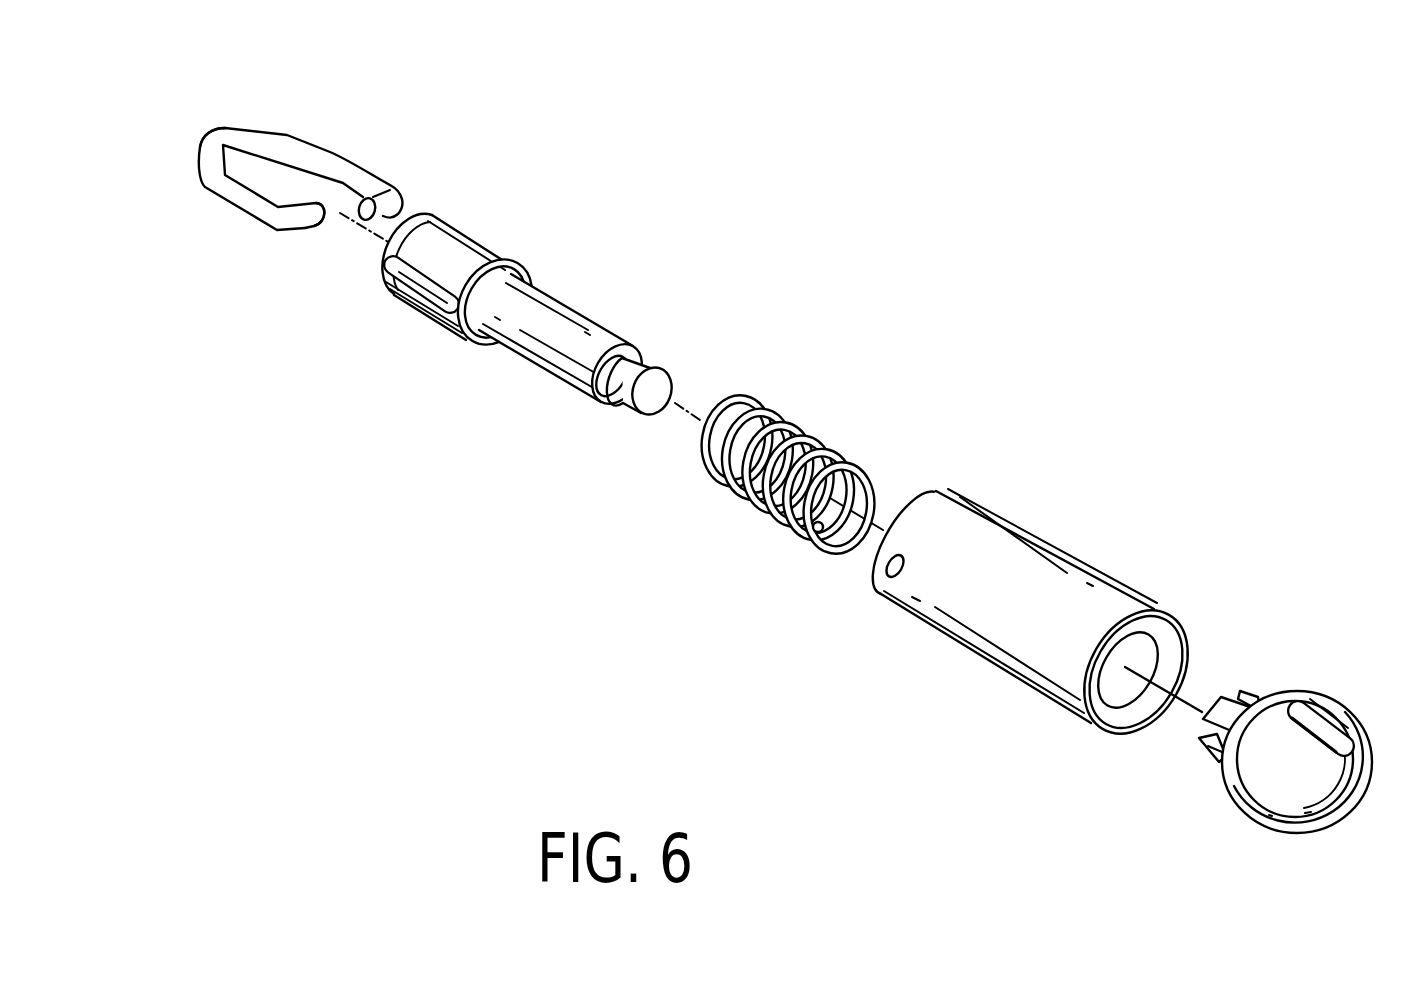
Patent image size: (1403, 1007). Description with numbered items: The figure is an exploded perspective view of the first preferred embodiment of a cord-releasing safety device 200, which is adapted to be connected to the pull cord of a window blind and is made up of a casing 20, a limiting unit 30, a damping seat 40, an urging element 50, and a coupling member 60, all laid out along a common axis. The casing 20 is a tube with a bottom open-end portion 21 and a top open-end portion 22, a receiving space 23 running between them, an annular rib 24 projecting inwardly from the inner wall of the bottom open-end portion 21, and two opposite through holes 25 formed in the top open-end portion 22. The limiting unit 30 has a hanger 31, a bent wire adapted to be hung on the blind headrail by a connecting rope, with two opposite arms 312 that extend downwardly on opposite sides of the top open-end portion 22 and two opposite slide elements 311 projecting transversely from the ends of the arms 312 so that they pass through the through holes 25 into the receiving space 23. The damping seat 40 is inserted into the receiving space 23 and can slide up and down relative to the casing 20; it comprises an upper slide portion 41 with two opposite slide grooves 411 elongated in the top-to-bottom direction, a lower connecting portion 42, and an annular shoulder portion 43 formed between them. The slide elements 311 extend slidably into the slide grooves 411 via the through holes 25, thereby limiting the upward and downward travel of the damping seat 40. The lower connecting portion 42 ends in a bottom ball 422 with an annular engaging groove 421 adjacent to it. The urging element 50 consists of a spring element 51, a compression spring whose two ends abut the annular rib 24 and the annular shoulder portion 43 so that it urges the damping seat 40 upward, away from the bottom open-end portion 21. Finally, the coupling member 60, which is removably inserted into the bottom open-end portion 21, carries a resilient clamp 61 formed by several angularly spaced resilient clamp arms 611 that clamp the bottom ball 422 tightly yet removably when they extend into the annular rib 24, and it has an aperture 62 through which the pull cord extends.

The cord-releasing safety device 200 is at (903, 314).
The casing 20 is at (1048, 541).
The bottom open-end portion 21 is at (1117, 615).
The top open-end portion 22 is at (920, 508).
The receiving space 23 is at (1140, 653).
The annular rib 24 is at (1117, 705).
The through holes 25 is at (890, 565).
The limiting unit 30 is at (299, 141).
The hanger 31 is at (206, 188).
The slide elements 311 is at (372, 198).
The arms 312 is at (268, 135).
The damping seat 40 is at (554, 280).
The upper slide portion 41 is at (453, 235).
The slide grooves 411 is at (420, 287).
The lower connecting portion 42 is at (532, 367).
The annular engaging groove 421 is at (610, 383).
The bottom ball 422 is at (641, 403).
The annular shoulder portion 43 is at (475, 340).
The urging element 50 is at (813, 416).
The spring element 51 is at (793, 418).
The coupling member 60 is at (1293, 671).
The resilient clamp 61 is at (1215, 757).
The resilient clamp arms 611 is at (1214, 712).
The aperture 62 is at (1332, 733).